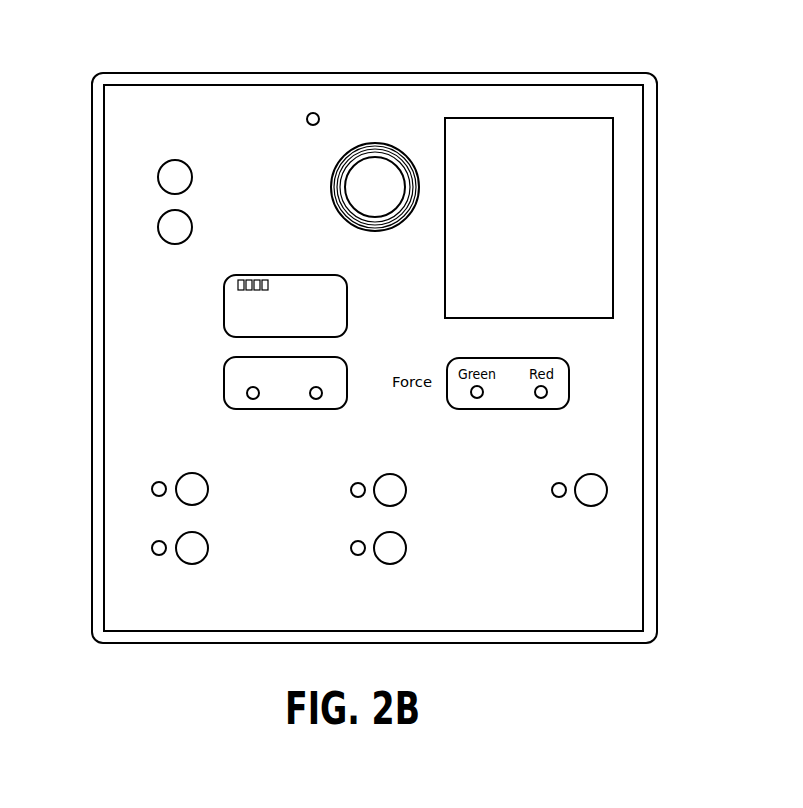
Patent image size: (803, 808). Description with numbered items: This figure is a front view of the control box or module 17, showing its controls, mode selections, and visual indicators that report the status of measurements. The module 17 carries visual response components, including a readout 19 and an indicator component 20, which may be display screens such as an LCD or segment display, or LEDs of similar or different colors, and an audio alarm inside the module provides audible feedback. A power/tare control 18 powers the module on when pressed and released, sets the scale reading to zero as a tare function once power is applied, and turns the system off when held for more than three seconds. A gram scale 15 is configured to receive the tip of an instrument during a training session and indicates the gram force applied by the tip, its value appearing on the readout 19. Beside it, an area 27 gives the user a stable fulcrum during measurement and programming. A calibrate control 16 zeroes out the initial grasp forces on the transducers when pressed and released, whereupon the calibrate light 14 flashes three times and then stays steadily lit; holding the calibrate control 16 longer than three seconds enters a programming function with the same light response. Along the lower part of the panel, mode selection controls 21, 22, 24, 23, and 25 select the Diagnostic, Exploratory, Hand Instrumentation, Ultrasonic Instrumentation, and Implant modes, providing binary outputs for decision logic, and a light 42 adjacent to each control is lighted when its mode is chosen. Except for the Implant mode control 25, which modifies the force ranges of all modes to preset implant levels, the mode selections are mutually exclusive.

The calibrate light 14 is at (311, 112).
The gram scale 15 is at (372, 143).
The calibrate control 16 is at (158, 177).
The control module 17 is at (638, 164).
The power/tare control 18 is at (158, 227).
The readout 19 is at (224, 300).
The visual response component 20 is at (224, 395).
The Diagnostic mode selection control 21 is at (188, 473).
The Exploratory mode selection control 22 is at (188, 533).
The Ultrasonic Instrumentation mode selection control 23 is at (407, 548).
The Hand Instrumentation mode selection control 24 is at (407, 490).
The Implant mode selection control 25 is at (607, 490).
The fulcrum area 27 is at (570, 231).
The mode indicator light 42 is at (152, 489).